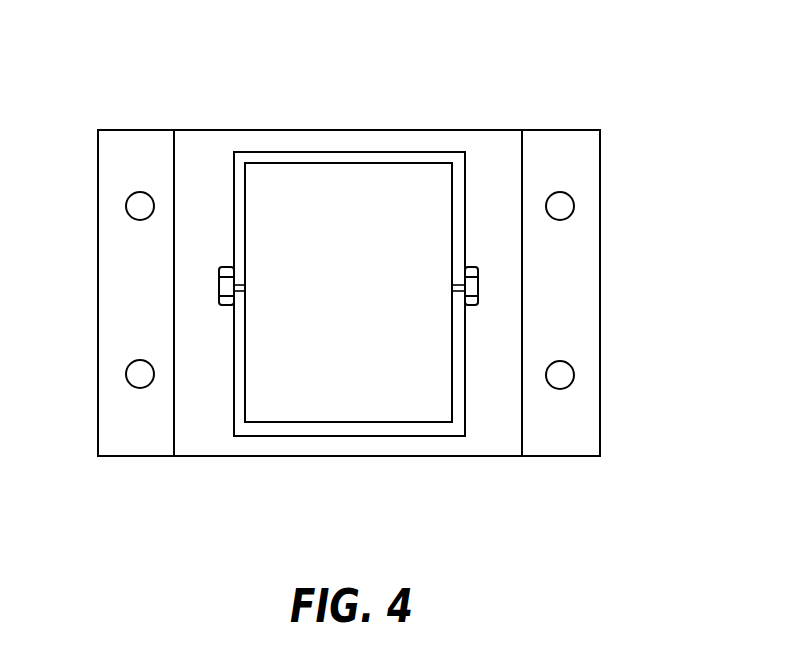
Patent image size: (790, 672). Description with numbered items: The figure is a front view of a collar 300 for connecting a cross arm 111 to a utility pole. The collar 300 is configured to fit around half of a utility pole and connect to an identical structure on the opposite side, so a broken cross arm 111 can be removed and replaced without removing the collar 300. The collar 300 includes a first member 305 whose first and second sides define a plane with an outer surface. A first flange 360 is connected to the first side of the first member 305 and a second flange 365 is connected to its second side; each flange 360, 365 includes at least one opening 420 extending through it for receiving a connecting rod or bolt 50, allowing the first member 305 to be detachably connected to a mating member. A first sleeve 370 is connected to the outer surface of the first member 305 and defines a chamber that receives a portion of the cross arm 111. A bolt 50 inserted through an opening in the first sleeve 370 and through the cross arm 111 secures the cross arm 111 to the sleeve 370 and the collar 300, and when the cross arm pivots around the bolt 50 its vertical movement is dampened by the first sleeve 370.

The collar 300 is at (492, 50).
The first member 305 is at (205, 435).
The first flange 360 is at (577, 429).
The second flange 365 is at (140, 435).
The first sleeve 370 is at (418, 440).
The cross arm 111 is at (358, 315).
The bolt 50 is at (472, 305).
The opening 420 is at (126, 374).